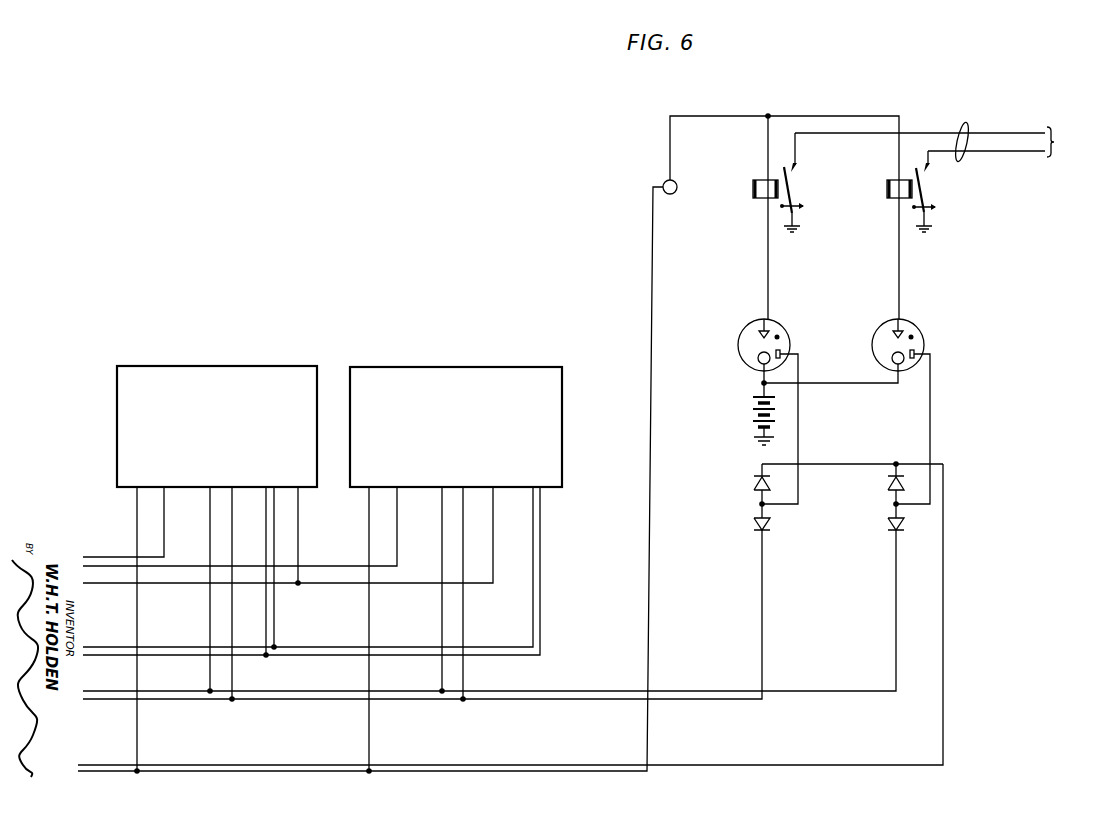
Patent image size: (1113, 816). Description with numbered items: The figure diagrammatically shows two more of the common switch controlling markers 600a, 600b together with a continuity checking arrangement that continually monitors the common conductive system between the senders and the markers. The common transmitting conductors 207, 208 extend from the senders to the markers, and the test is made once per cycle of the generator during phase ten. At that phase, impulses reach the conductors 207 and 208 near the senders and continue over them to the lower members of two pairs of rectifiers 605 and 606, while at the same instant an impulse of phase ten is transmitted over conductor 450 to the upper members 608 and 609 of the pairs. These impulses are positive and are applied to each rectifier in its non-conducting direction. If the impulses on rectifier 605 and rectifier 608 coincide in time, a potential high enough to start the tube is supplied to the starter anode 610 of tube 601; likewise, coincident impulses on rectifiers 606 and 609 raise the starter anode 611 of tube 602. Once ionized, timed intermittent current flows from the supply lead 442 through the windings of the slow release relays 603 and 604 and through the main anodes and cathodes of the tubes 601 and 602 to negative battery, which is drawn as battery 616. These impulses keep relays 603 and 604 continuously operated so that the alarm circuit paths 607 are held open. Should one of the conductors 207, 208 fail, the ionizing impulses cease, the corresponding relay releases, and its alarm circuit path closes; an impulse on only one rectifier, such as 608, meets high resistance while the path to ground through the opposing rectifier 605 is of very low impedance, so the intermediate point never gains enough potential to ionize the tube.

The common switch controlling marker 600a is at (217, 426).
The common switch controlling marker 600b is at (456, 427).
The discharge tube 601 is at (782, 324).
The discharge tube 602 is at (919, 324).
The slow release relay 603 is at (757, 199).
The slow release relay 604 is at (890, 199).
The rectifier 605 is at (753, 525).
The rectifier 606 is at (886, 525).
The alarm circuit paths 607 is at (963, 135).
The rectifier 608 is at (753, 483).
The rectifier 609 is at (886, 483).
The starter anode 610 is at (784, 351).
The starter anode 611 is at (920, 351).
The battery 616 is at (752, 407).
The common transmitting conductor 207 is at (607, 700).
The common transmitting conductor 208 is at (606, 692).
The supply lead 442 is at (648, 747).
The conductor 450 is at (792, 768).